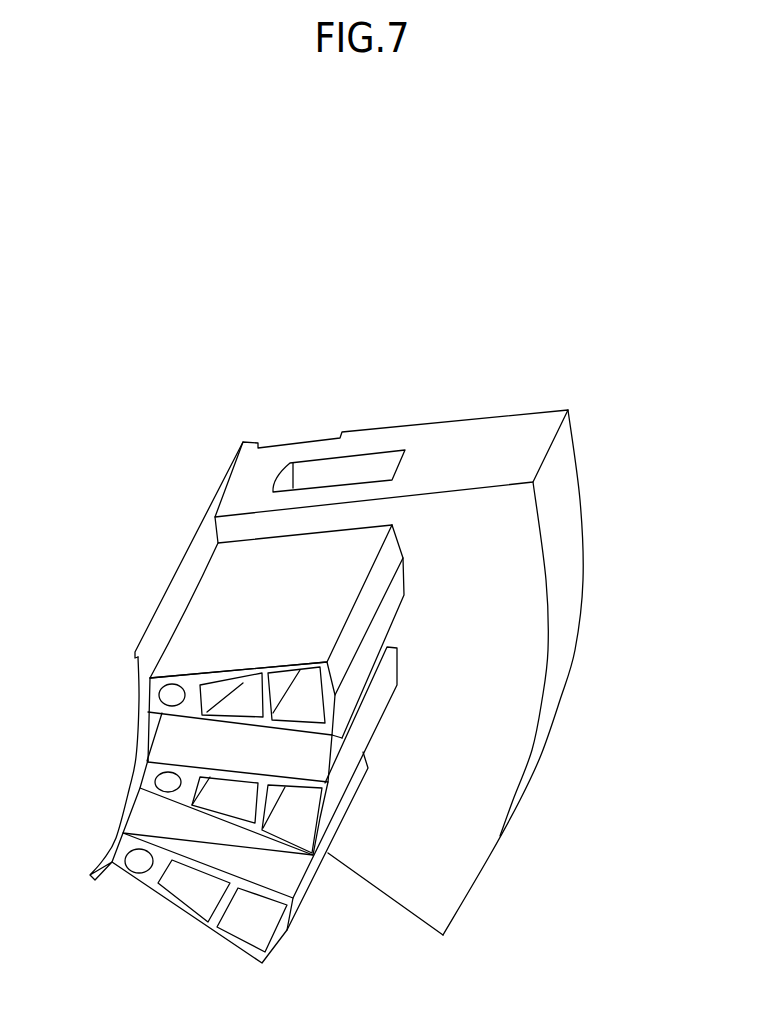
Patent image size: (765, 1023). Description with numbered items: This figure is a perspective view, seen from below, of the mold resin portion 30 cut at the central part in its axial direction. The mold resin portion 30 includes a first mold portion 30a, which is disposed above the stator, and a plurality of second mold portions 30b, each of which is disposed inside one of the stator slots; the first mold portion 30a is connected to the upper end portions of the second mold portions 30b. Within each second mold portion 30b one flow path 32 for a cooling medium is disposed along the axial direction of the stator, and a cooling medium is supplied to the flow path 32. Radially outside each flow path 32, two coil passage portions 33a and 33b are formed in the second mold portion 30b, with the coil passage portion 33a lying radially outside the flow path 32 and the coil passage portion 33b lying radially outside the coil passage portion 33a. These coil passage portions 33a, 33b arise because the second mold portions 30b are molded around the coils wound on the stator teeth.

The mold resin portion 30 is at (373, 606).
The first mold portion 30a is at (569, 521).
The second mold portion 30b is at (363, 615).
The flow path 32 is at (158, 776).
The coil passage portion 33a is at (234, 686).
The coil passage portion 33b is at (283, 680).